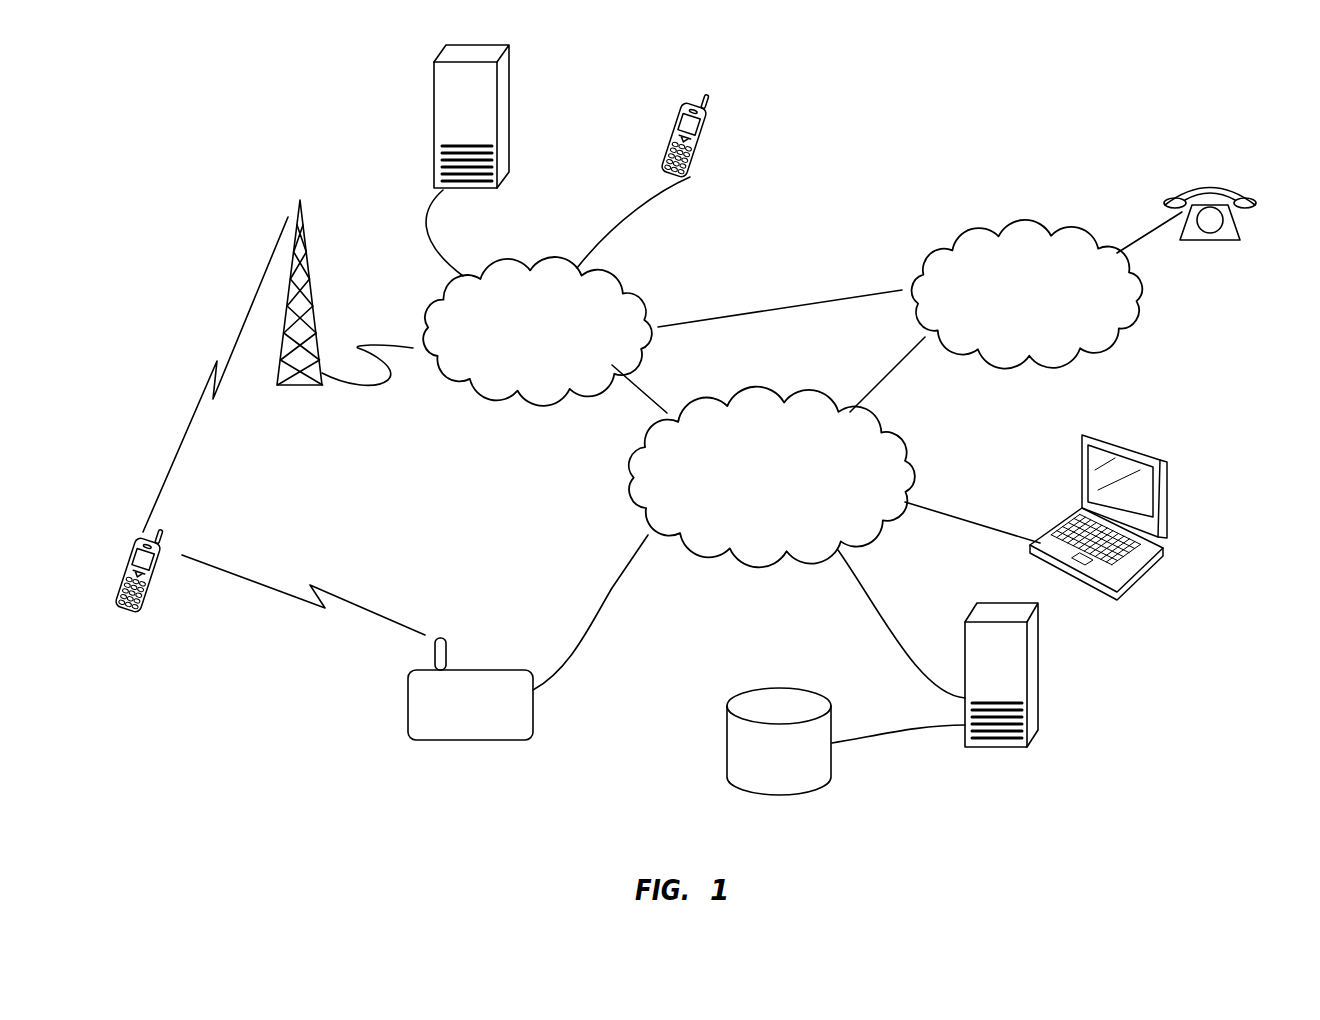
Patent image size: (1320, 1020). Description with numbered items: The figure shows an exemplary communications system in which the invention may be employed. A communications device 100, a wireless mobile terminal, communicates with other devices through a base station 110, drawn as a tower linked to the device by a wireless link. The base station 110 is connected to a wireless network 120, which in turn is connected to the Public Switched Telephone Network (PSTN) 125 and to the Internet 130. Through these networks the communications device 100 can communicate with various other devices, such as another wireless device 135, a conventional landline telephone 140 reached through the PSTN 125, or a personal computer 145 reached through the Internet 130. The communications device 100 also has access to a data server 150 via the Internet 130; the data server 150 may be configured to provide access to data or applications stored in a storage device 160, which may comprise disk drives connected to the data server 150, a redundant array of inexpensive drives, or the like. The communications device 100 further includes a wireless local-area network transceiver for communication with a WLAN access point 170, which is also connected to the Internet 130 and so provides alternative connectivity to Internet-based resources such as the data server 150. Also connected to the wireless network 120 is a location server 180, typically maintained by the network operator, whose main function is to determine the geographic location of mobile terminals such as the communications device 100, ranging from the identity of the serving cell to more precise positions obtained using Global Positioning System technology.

The communications device 100 is at (146, 592).
The base station 110 is at (313, 300).
The wireless network 120 is at (518, 365).
The Public Switched Telephone Network (PSTN) 125 is at (1008, 316).
The Internet 130 is at (748, 502).
The wireless device 135 is at (690, 163).
The conventional landline telephone 140 is at (1218, 182).
The personal computer 145 is at (1167, 488).
The data server 150 is at (1040, 648).
The storage device 160 is at (833, 762).
The WLAN access point 170 is at (495, 740).
The location server 180 is at (510, 90).